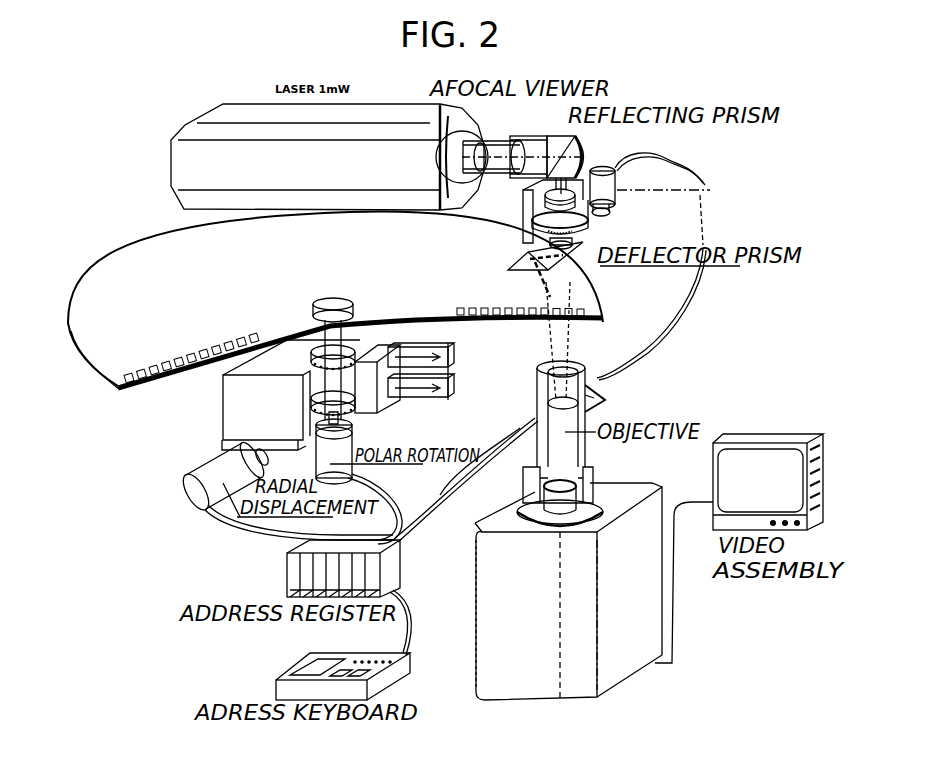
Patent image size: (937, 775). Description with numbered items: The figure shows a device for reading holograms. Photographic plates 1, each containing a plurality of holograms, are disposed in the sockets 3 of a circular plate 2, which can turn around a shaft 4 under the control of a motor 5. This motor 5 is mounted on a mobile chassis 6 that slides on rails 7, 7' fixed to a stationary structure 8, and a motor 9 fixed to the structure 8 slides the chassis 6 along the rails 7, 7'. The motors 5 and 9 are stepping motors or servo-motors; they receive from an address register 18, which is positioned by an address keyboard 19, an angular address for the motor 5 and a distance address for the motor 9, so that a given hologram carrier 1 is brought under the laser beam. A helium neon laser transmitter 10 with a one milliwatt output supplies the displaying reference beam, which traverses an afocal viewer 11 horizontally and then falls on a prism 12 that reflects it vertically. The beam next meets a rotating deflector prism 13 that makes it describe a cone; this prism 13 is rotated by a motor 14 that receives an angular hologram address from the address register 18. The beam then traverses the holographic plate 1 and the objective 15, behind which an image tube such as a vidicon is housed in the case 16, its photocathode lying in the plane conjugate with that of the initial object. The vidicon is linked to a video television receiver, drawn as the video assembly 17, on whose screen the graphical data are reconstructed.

The photographic plate 1 is at (145, 384).
The circular plate 2 is at (169, 239).
The socket 3 is at (118, 386).
The shaft 4 is at (327, 381).
The motor 5 is at (351, 447).
The mobile chassis 6 is at (248, 407).
The rail 7 is at (428, 353).
The rail 7' is at (432, 371).
The stationary structure 8 is at (437, 392).
The motor 9 is at (193, 490).
The helium neon laser transmitter 10 is at (373, 115).
The afocal viewer 11 is at (505, 138).
The prism 12 is at (586, 144).
The rotating deflector prism 13 is at (520, 264).
The motor 14 is at (614, 203).
The objective 15 is at (550, 404).
The case 16 is at (483, 579).
The video assembly 17 is at (750, 452).
The address register 18 is at (287, 565).
The address keyboard 19 is at (276, 688).